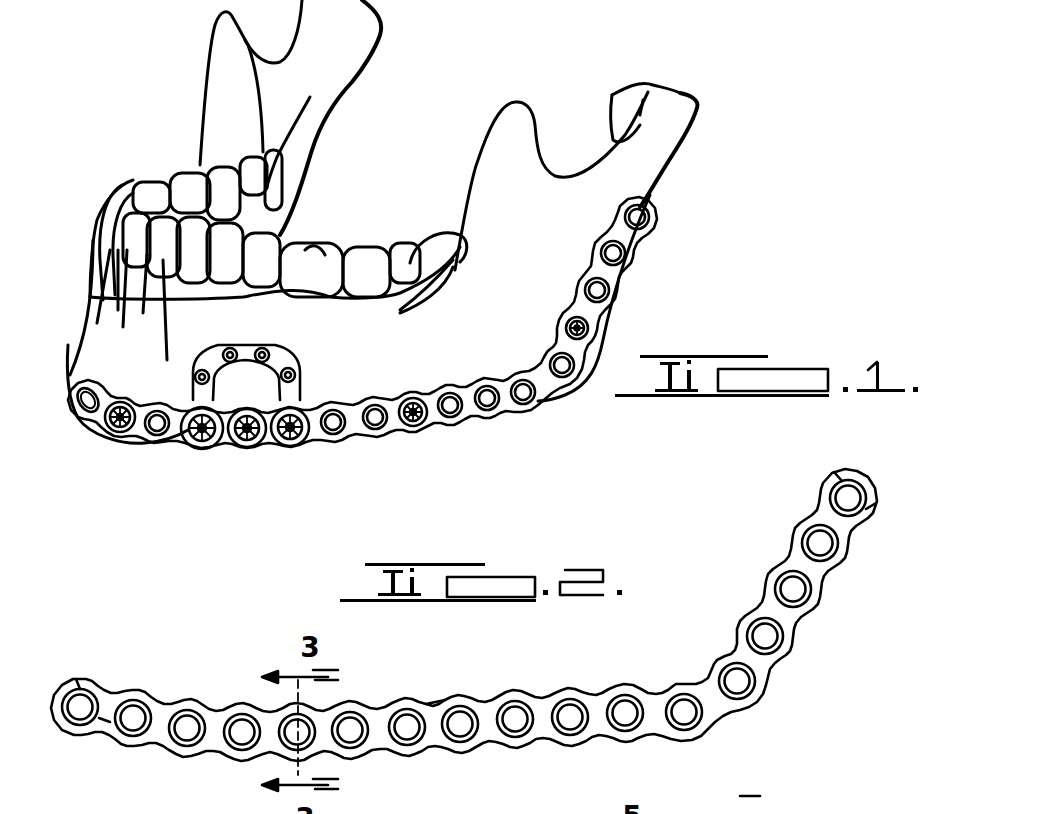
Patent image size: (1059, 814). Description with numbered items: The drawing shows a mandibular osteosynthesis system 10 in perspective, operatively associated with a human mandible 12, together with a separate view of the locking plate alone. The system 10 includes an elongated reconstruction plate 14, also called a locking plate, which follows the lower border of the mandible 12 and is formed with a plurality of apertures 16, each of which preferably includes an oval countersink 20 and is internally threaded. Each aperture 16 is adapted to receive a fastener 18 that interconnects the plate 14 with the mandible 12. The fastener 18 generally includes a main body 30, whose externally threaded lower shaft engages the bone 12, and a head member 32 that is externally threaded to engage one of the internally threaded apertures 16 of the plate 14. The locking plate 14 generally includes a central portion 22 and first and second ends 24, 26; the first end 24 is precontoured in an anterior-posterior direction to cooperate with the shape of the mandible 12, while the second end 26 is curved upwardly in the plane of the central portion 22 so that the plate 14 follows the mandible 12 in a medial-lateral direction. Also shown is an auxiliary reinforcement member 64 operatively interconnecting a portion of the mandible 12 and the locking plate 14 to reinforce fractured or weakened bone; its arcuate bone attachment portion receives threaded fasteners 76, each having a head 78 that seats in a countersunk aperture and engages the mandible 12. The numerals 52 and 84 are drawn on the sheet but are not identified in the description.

In FIG. 1, the mandibular osteosynthesis system 10 is at (348, 362).
In FIG. 1, the mandible 12 is at (683, 153).
In FIG. 1, the reconstruction plate 14 is at (378, 431).
In FIG. 2, the reconstruction plate 14 is at (472, 641).
In FIG. 1, the aperture 16 is at (553, 360).
In FIG. 2, the aperture 16 is at (567, 718).
In FIG. 1, the fastener 18 is at (125, 398).
In FIG. 2, the oval countersink 20 is at (512, 713).
In FIG. 2, the central portion 22 is at (455, 748).
In FIG. 2, the first end 24 is at (837, 567).
In FIG. 2, the second end 26 is at (108, 686).
In FIG. 1, the main body 30 is at (423, 410).
In FIG. 1, the head member 32 is at (408, 398).
In FIG. 1, the screw 52 is at (290, 447).
In FIG. 1, the auxiliary reinforcement member 64 is at (384, 348).
In FIG. 1, the threaded fastener 76 is at (240, 346).
In FIG. 1, the head 78 is at (208, 370).
In FIG. 2, the plate portion 84 is at (752, 805).